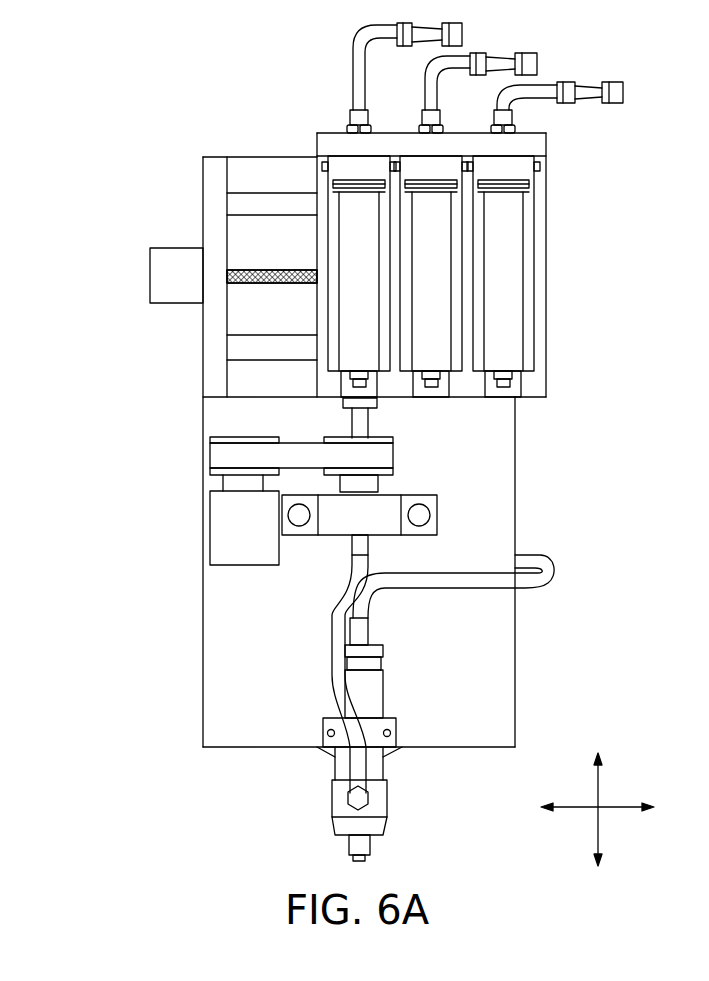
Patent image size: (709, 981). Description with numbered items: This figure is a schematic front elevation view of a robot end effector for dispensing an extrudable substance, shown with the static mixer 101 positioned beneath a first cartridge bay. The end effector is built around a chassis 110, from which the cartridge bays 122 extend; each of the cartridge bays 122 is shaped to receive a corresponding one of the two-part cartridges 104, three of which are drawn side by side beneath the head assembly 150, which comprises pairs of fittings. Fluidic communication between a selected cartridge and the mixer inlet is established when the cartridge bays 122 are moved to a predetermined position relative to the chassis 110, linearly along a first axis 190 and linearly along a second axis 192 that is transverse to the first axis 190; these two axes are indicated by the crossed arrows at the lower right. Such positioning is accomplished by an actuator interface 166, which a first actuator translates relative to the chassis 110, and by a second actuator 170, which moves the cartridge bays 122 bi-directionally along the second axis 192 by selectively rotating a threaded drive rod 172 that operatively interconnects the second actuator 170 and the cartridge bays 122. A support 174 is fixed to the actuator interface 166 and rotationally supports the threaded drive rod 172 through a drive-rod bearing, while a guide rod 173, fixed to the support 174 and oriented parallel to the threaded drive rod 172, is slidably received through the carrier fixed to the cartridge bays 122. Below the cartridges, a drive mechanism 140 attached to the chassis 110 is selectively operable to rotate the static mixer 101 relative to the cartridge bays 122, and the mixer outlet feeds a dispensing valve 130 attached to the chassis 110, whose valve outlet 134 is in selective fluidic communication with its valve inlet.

The static mixer 101 is at (372, 420).
The two-part cartridges 104 is at (334, 197).
The chassis 110 is at (516, 655).
The cartridge bays 122 is at (546, 320).
The dispensing valve 130 is at (387, 800).
The valve outlet 134 is at (349, 866).
The drive mechanism 140 is at (192, 542).
The head assembly 150 is at (546, 140).
The actuator interface 166 is at (240, 157).
The second actuator 170 is at (150, 270).
The threaded drive rod 172 is at (286, 270).
The guide rod 173 is at (240, 193).
The support 174 is at (205, 160).
The first axis 190 is at (592, 776).
The second axis 192 is at (618, 806).